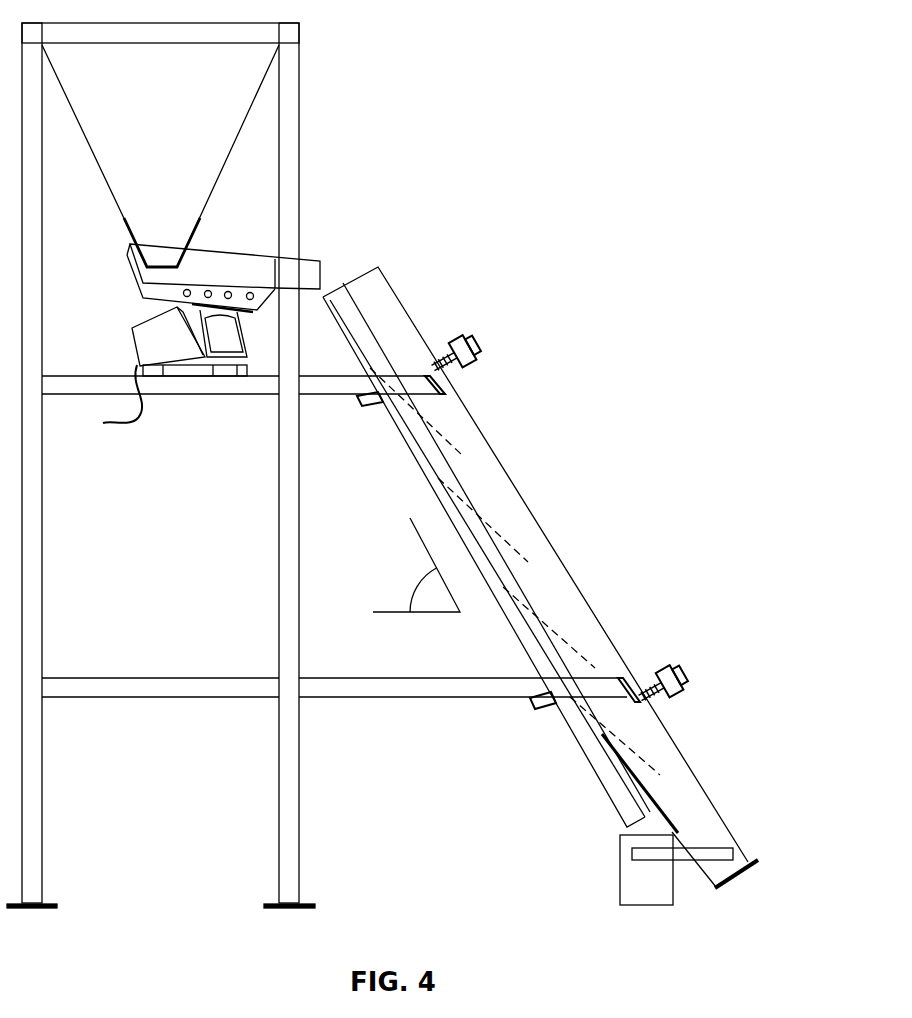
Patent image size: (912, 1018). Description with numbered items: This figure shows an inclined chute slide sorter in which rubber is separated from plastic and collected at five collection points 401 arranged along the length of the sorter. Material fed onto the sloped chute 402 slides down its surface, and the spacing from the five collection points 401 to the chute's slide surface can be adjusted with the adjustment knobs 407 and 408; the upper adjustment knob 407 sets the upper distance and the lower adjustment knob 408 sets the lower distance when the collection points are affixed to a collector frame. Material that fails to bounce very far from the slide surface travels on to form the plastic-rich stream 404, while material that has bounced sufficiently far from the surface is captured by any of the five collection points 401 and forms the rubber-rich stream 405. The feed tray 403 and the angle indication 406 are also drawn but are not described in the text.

The collection points 401 is at (458, 446).
The inclined chute 402 is at (342, 311).
The vibratory feeder tray 403 is at (291, 288).
The plastic-rich stream 404 is at (634, 840).
The rubber-rich stream 405 is at (742, 883).
The inclination angle 406 is at (407, 588).
The upper adjustment knob 407 is at (480, 350).
The lower adjustment knob 408 is at (682, 667).